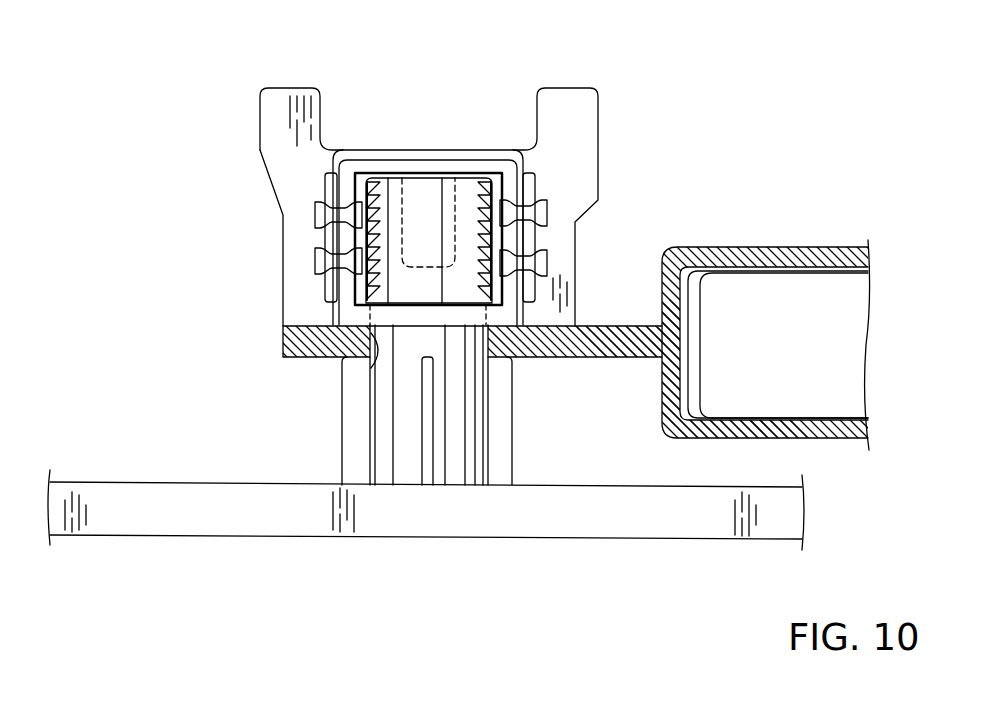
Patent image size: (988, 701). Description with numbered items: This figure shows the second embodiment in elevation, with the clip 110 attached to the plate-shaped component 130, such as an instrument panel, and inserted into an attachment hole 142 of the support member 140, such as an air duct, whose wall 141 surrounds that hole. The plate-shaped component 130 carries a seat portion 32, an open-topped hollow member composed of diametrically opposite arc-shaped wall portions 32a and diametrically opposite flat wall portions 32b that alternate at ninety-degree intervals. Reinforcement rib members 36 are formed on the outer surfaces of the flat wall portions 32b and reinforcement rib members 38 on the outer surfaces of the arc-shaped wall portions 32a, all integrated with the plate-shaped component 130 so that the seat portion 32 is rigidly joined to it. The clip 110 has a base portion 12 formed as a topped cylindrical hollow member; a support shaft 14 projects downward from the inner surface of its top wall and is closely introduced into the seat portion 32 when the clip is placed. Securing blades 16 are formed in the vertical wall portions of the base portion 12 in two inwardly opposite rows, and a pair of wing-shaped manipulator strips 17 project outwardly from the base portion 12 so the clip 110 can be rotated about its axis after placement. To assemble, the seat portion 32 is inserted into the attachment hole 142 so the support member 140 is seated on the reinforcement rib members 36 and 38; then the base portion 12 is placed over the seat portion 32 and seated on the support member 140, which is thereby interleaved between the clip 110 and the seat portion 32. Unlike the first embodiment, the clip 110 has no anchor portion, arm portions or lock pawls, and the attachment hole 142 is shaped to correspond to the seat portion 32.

The clip 110 is at (644, 80).
The manipulator strips 17 is at (283, 106).
The base portion 12 is at (380, 168).
The arc-shaped wall portions 32a is at (366, 188).
The support shaft 14 is at (420, 242).
The securing blades 16 is at (366, 276).
The flat wall portions 32b is at (410, 297).
The attachment holes 142 is at (372, 358).
The partition wall 141 is at (565, 358).
The support member 140 is at (717, 252).
The reinforcement rib members 38 is at (342, 462).
The reinforcement rib members 36 is at (425, 462).
The seat portion 32 is at (470, 470).
The plate-shaped component 130 is at (327, 538).